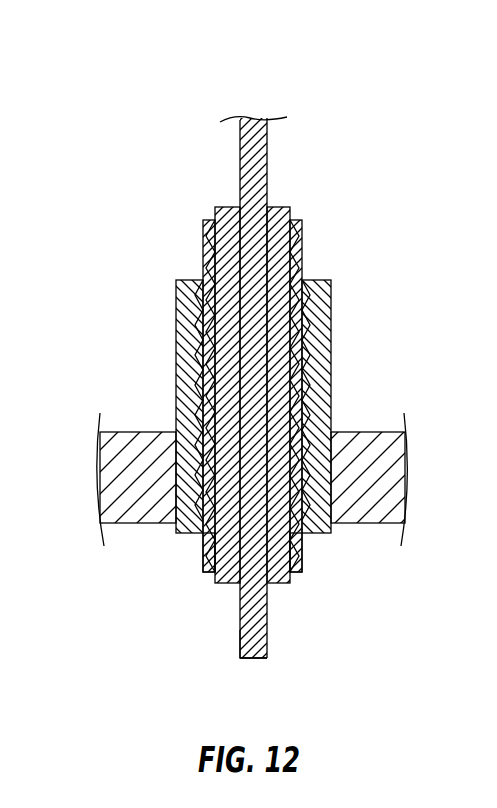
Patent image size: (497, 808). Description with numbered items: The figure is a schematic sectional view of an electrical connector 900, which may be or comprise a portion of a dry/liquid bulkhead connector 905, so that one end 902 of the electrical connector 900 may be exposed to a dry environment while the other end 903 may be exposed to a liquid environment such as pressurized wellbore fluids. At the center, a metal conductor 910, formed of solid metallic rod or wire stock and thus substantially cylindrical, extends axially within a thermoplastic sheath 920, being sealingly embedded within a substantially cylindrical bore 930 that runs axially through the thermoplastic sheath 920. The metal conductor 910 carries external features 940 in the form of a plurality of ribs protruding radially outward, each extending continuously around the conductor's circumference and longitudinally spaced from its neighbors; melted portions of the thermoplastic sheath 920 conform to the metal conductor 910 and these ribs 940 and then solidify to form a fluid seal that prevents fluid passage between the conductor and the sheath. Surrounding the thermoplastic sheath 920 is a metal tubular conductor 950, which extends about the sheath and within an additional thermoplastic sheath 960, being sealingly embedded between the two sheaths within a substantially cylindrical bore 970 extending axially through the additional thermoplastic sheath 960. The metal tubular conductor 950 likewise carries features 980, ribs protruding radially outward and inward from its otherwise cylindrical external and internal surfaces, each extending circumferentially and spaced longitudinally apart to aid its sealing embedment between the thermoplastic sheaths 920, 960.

The electrical connector 900 is at (209, 83).
The one end 902 is at (222, 657).
The other end 903 is at (270, 158).
The dry/liquid bulkhead connector 905 is at (135, 523).
The metal conductor 910 is at (268, 622).
The thermoplastic sheath 920 is at (215, 211).
The bore 930 is at (210, 554).
The ribs 940 is at (301, 251).
The metal tubular conductor 950 is at (303, 553).
The additional thermoplastic sheath 960 is at (176, 422).
The bore 970 is at (207, 277).
The ribs 980 is at (176, 342).